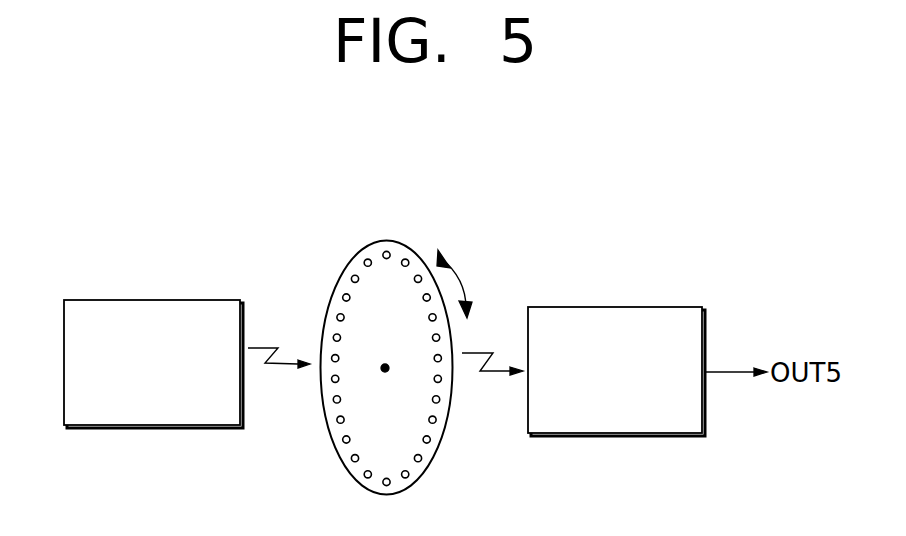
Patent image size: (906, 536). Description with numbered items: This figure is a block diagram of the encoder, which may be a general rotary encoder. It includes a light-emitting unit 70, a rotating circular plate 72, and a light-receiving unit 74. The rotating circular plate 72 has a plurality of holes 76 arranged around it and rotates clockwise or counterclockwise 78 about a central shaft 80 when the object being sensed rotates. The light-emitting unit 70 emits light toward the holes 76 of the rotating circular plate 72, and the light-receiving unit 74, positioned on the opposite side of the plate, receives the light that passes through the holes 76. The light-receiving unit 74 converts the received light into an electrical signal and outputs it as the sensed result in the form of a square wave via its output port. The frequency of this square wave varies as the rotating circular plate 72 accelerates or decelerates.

The light-emitting unit 70 is at (202, 300).
The rotating circular plate 72 is at (413, 250).
The light-receiving unit 74 is at (662, 307).
The holes 76 is at (347, 447).
The clockwise or counterclockwise rotation 78 is at (459, 280).
The central shaft 80 is at (385, 368).